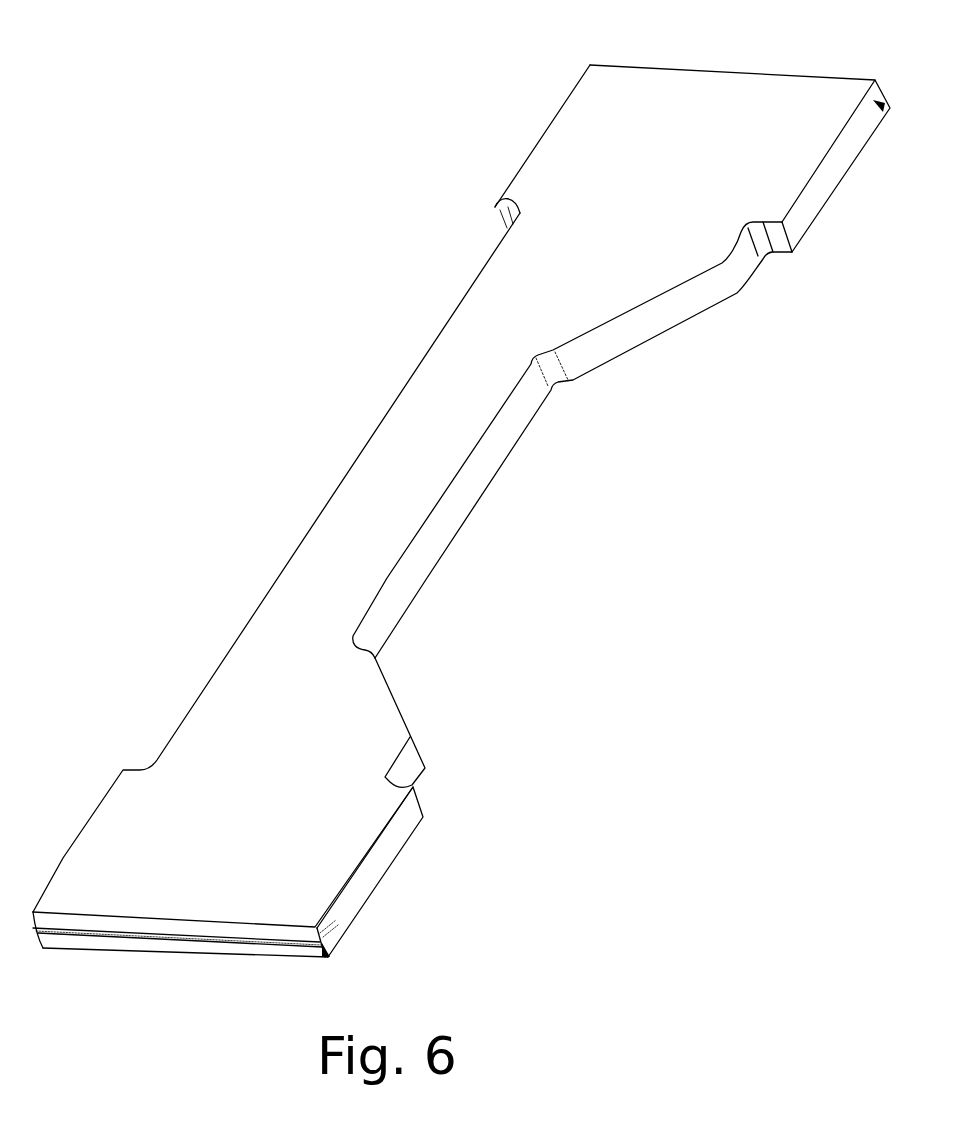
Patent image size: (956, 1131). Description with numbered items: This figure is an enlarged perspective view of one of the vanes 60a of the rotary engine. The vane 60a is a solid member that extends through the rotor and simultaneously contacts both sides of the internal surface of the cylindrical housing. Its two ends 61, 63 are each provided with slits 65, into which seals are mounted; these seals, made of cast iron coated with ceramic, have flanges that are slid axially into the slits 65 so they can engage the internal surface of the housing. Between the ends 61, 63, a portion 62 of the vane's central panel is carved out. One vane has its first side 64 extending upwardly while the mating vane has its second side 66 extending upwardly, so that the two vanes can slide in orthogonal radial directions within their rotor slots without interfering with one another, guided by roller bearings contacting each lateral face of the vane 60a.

The vane 60a is at (305, 522).
The end 61 is at (68, 940).
The portion of a central panel 62 is at (460, 510).
The end 63 is at (688, 70).
The first side 64 is at (98, 807).
The slit 65 is at (873, 107).
The second side 66 is at (405, 833).